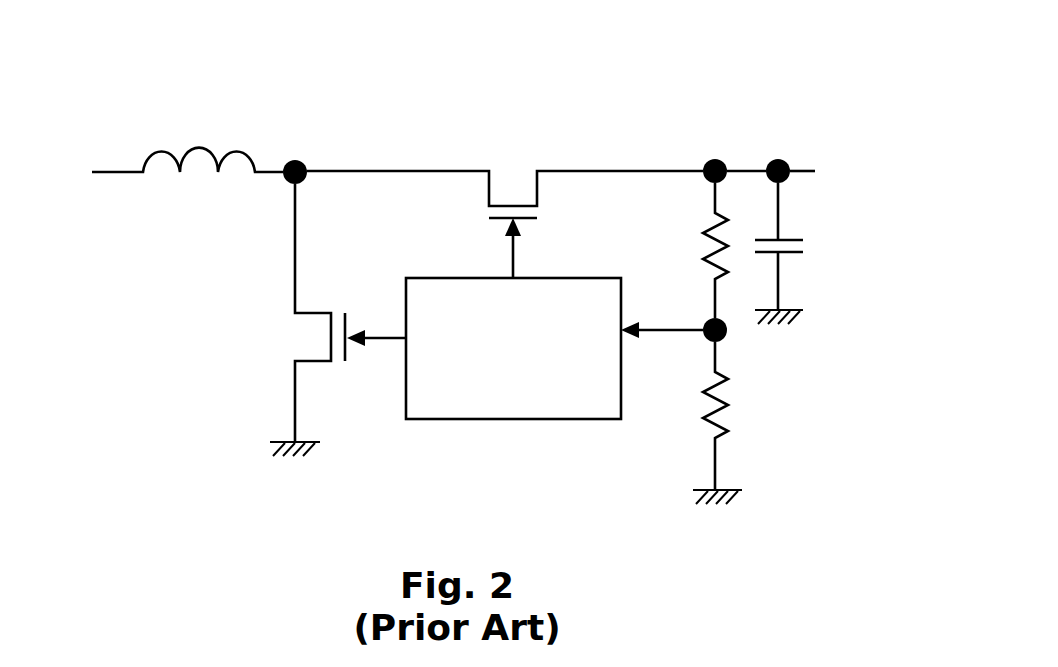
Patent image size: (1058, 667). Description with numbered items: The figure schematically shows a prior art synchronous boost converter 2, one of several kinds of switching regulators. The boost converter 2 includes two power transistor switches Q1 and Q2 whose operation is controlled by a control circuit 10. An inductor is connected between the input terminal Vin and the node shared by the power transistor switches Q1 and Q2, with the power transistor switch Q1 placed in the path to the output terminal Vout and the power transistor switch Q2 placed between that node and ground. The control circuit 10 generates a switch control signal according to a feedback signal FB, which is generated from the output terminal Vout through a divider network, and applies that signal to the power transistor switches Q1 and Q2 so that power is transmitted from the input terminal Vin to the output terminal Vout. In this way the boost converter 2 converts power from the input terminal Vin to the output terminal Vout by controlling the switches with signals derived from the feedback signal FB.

The boost converter 2 is at (697, 80).
The control circuit 10 is at (498, 387).
The power transistor switch Q1 is at (505, 207).
The power transistor switch Q2 is at (328, 320).
The feedback signal FB is at (674, 318).
The input terminal Vin is at (159, 167).
The output terminal Vout is at (844, 172).